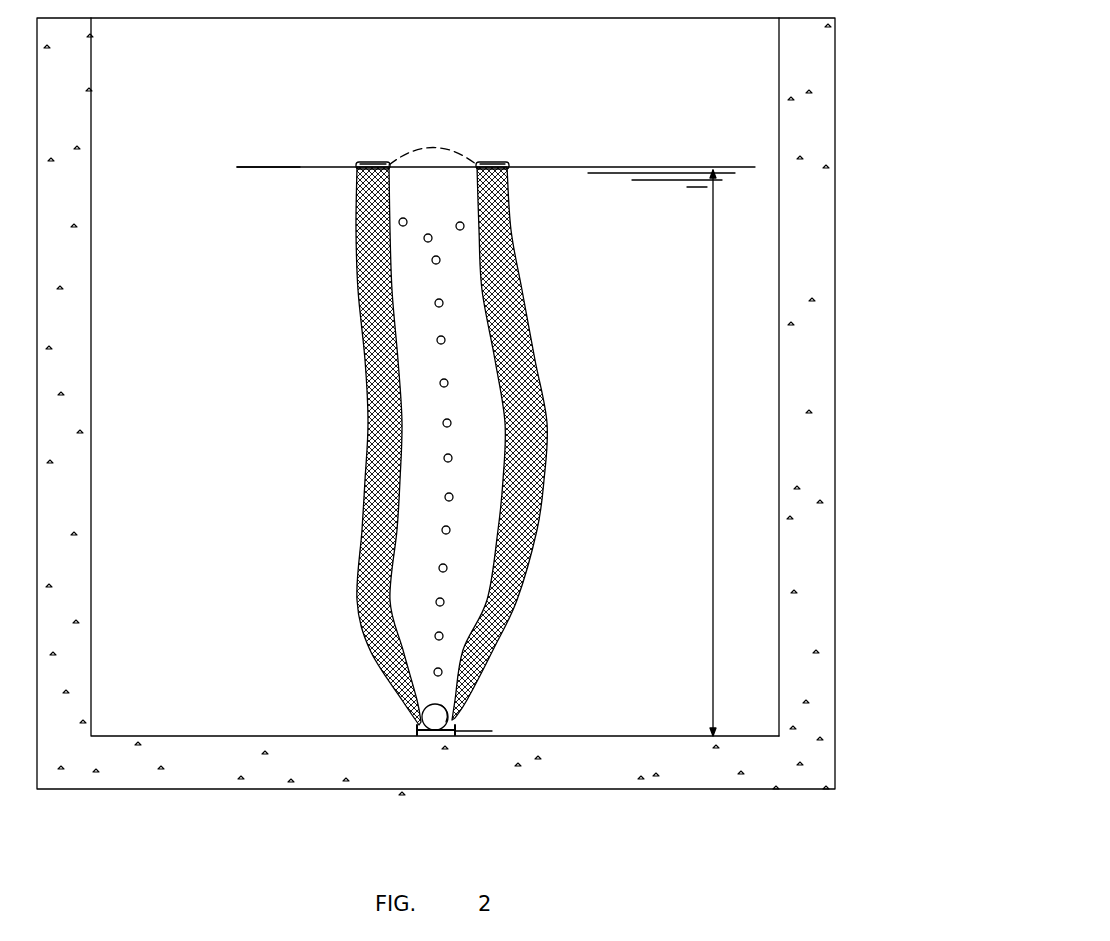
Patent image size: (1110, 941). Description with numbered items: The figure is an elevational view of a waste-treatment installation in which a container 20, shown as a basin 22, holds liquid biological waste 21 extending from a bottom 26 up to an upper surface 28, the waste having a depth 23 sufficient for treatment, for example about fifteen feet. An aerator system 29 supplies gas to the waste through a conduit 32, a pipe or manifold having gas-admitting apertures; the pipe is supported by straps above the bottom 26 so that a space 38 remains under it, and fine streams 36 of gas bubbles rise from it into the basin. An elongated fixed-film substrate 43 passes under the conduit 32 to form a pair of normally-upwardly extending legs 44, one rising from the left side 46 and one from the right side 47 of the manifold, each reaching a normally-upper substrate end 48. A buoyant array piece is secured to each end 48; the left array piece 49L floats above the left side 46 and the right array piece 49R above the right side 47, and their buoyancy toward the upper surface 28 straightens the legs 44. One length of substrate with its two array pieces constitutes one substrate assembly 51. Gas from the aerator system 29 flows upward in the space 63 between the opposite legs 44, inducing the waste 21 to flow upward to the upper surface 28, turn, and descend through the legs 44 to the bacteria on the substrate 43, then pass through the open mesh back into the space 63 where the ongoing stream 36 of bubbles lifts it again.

The container 20 is at (837, 42).
The waste 21 is at (632, 172).
The basin 22 is at (779, 44).
The depth 23 is at (713, 447).
The bottom 26 is at (224, 735).
The upper surface 28 is at (290, 166).
The aerator system 29 is at (405, 725).
The conduit 32 is at (455, 715).
The fine streams 36 is at (445, 636).
The space 38 is at (483, 748).
The fixed-film substrate 43 is at (537, 371).
The legs 44 is at (368, 382).
The left side 46 is at (347, 452).
The right side 47 is at (565, 422).
The substrate end 48 is at (358, 178).
The array pieces of the left subgroup 49L is at (376, 163).
The array pieces of the right subgroup 49R is at (492, 163).
The substrate assembly 51 is at (330, 356).
The space 63 is at (470, 530).